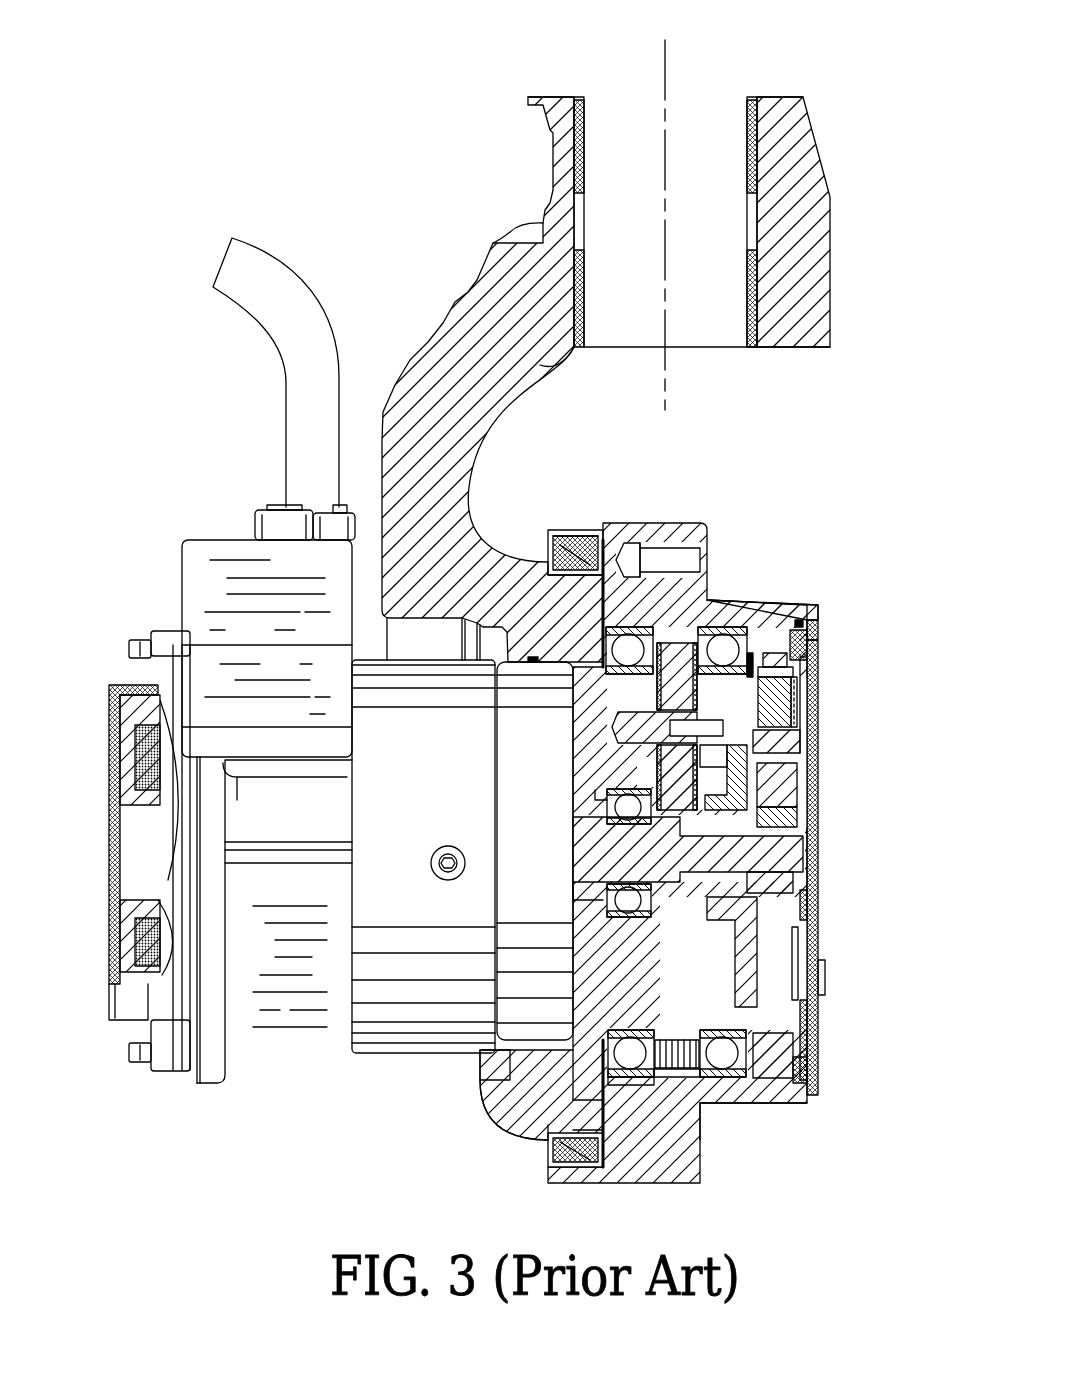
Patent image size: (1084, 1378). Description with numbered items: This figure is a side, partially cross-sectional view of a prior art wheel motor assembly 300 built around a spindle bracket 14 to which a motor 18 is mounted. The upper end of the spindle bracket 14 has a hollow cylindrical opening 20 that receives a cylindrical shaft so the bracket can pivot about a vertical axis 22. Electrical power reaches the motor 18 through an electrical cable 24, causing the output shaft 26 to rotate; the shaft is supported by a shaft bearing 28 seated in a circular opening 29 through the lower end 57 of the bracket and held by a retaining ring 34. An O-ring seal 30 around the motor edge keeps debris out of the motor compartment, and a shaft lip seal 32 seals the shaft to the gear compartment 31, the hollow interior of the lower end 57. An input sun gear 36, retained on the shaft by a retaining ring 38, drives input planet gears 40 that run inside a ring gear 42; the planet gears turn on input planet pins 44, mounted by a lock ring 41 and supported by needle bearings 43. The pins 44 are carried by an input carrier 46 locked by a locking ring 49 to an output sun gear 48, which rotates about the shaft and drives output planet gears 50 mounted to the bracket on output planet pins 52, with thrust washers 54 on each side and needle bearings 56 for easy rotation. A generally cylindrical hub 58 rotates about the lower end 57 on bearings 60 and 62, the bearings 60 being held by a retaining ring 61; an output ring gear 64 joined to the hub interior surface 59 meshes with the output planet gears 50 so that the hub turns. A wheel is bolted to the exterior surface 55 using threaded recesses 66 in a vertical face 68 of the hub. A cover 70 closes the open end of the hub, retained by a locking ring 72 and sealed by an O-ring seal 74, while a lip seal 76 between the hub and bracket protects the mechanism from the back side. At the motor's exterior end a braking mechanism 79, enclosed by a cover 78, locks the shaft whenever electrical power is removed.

The prior art pump assembly 300 is at (320, 104).
The spindle bracket 14 is at (469, 487).
The motor 18 is at (370, 1035).
The hollow cylindrical opening 20 is at (716, 120).
The vertical axis 22 is at (664, 78).
The electrical cable 24 is at (297, 417).
The output shaft 26 is at (545, 1125).
The shaft bearing 28 is at (663, 1069).
The circular opening 29 is at (580, 1137).
The O-ring seal 30 is at (478, 1045).
The gear compartment 31 is at (750, 962).
The shaft lip seal 32 is at (570, 1085).
The retaining ring 34 is at (683, 1066).
The input sun gear 36 is at (793, 880).
The retaining ring 38 is at (803, 852).
The input planet gears 40 is at (818, 655).
The lock ring 41 is at (797, 725).
The ring gear 42 is at (805, 633).
The needle bearings 43 is at (792, 692).
The input planet pins 44 is at (800, 745).
The input carrier 46 is at (807, 905).
The output sun gear 48 is at (797, 820).
The locking ring 49 is at (797, 785).
The output planet gears 50 is at (650, 640).
The output planet pins 52 is at (745, 700).
The thrust washers 54 is at (668, 712).
The exterior surface 55 is at (780, 1100).
The needle bearings 56 is at (676, 643).
The lower end 57 is at (480, 1118).
The hub 58 is at (615, 523).
The interior surface 59 is at (624, 1069).
The bearings 60 is at (763, 1090).
The retaining ring 61 is at (803, 626).
The bearings 62 is at (617, 1085).
The output ring gear 64 is at (720, 1073).
The threaded recesses 66 is at (735, 630).
The vertical face 68 is at (700, 1140).
The cover 70 is at (825, 980).
The locking ring 72 is at (818, 630).
The O-ring seal 74 is at (818, 608).
The lip seal 76 is at (582, 532).
The cover 78 is at (112, 735).
The braking mechanism 79 is at (120, 790).